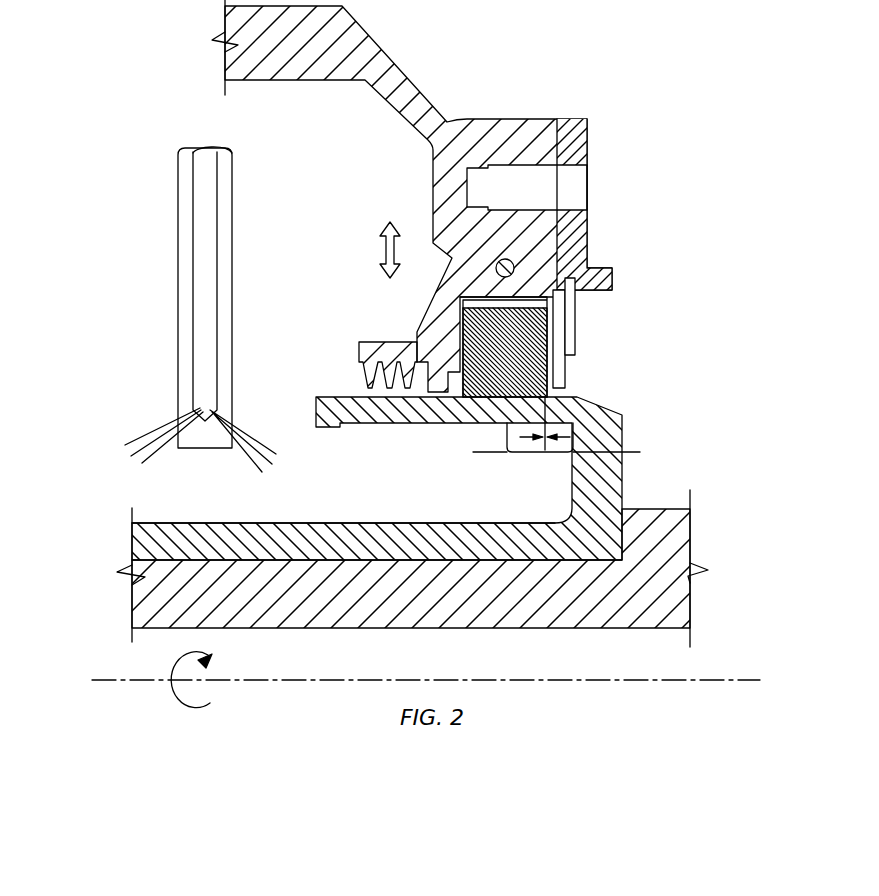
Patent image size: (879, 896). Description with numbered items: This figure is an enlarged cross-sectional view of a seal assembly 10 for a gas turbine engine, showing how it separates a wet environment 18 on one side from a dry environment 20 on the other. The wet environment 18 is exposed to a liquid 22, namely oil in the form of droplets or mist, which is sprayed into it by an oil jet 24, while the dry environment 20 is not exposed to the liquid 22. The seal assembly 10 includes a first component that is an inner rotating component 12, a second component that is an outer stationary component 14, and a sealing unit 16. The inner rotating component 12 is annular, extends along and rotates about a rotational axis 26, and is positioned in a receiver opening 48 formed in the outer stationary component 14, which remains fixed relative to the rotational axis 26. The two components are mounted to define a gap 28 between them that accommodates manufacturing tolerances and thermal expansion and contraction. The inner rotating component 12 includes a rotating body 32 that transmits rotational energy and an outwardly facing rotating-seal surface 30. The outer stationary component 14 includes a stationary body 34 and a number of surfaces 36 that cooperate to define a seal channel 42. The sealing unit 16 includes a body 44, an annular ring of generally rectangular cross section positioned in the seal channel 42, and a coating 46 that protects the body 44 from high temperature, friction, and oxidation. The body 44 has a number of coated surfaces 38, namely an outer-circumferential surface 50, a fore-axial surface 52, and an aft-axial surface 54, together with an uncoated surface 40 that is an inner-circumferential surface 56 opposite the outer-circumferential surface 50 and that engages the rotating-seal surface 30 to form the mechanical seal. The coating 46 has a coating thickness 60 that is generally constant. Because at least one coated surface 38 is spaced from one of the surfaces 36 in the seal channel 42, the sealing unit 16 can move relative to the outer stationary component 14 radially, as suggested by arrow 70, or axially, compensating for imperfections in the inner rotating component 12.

The seal assembly 10 is at (212, 112).
The inner rotating component 12 is at (448, 545).
The outer stationary component 14 is at (466, 300).
The sealing unit 16 is at (417, 333).
The wet environment 18 is at (355, 184).
The dry environment 20 is at (678, 335).
The liquid 22 is at (252, 434).
The oil jet 24 is at (178, 198).
The rotational axis 26 is at (100, 678).
The gap 28 is at (560, 393).
The rotating-seal surface 30 is at (437, 397).
The rotating body 32 is at (188, 533).
The stationary body 34 is at (360, 357).
The surfaces 36 is at (480, 340).
The coated surfaces 38 is at (547, 395).
The uncoated surface 40 is at (622, 452).
The seal channel 42 is at (590, 152).
The body 44 is at (507, 400).
The coating 46 is at (545, 377).
The receiver opening 48 is at (140, 486).
The outer-circumferential surface 50 is at (492, 362).
The fore-axial surface 52 is at (402, 397).
The aft-axial surface 54 is at (553, 330).
The inner-circumferential surface 56 is at (505, 432).
The coating thickness 60 is at (571, 442).
The arrow 70 is at (386, 250).